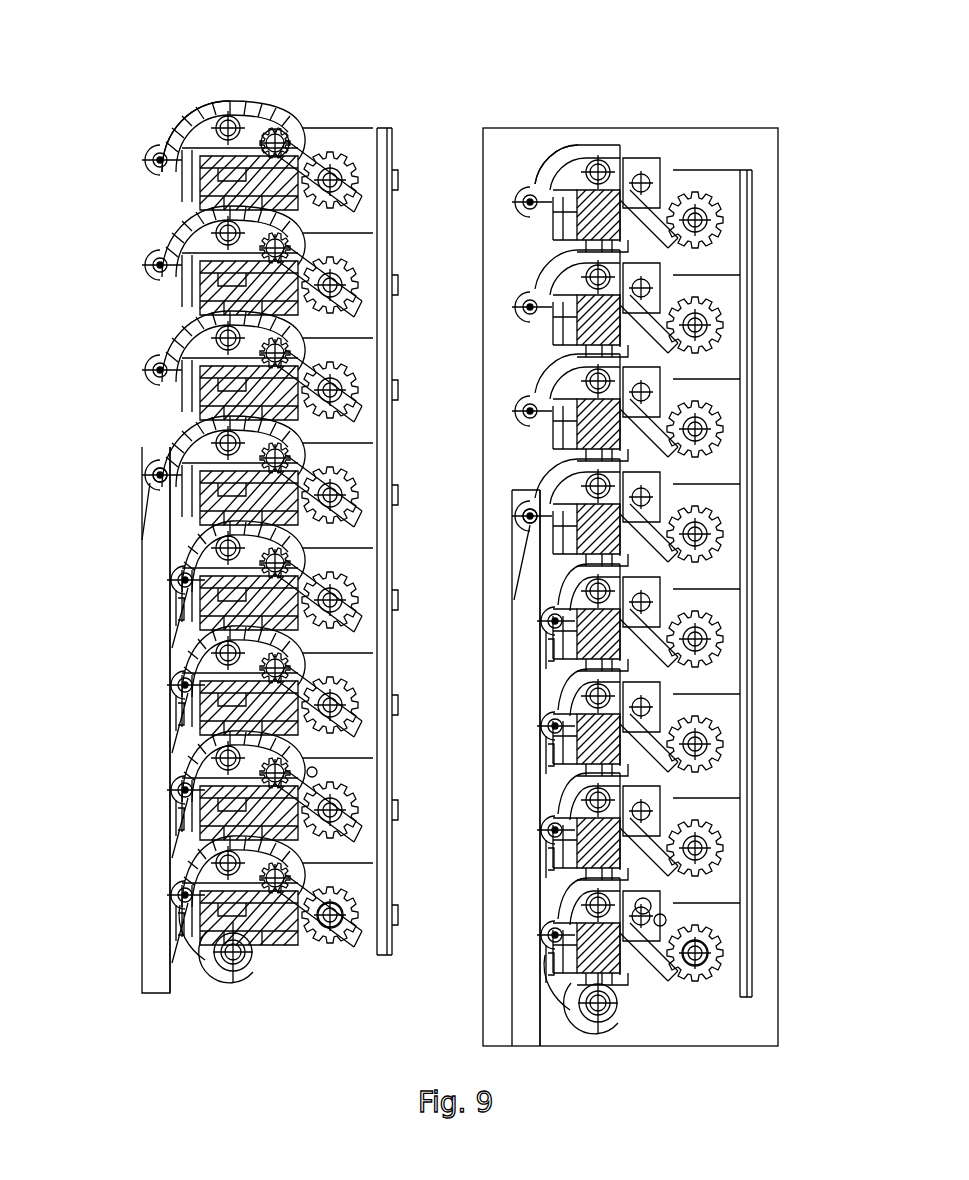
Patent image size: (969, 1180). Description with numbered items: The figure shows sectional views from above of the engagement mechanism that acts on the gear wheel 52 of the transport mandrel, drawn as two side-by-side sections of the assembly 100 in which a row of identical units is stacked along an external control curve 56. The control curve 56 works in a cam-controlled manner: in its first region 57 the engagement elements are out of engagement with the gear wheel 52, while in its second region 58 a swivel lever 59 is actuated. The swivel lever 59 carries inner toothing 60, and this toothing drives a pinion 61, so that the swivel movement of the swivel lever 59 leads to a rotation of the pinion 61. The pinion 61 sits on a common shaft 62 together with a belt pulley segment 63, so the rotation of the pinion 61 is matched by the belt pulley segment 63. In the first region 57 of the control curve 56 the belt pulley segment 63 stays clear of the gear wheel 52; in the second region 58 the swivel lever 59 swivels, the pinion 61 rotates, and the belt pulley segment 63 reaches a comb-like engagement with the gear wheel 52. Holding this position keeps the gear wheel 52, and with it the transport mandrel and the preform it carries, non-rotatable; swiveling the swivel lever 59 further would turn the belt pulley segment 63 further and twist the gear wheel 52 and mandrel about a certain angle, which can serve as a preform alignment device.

The sorting device / assembly 100 is at (115, 348).
The gear wheel 52 is at (352, 927).
The control curve 56 is at (162, 978).
The first region 57 is at (160, 733).
The second region 58 is at (145, 478).
The swivel lever 59 is at (226, 100).
The inner toothing 60 is at (288, 133).
The pinion 61 is at (310, 772).
The common shaft 62 is at (645, 905).
The belt pulley segment 63 is at (660, 920).